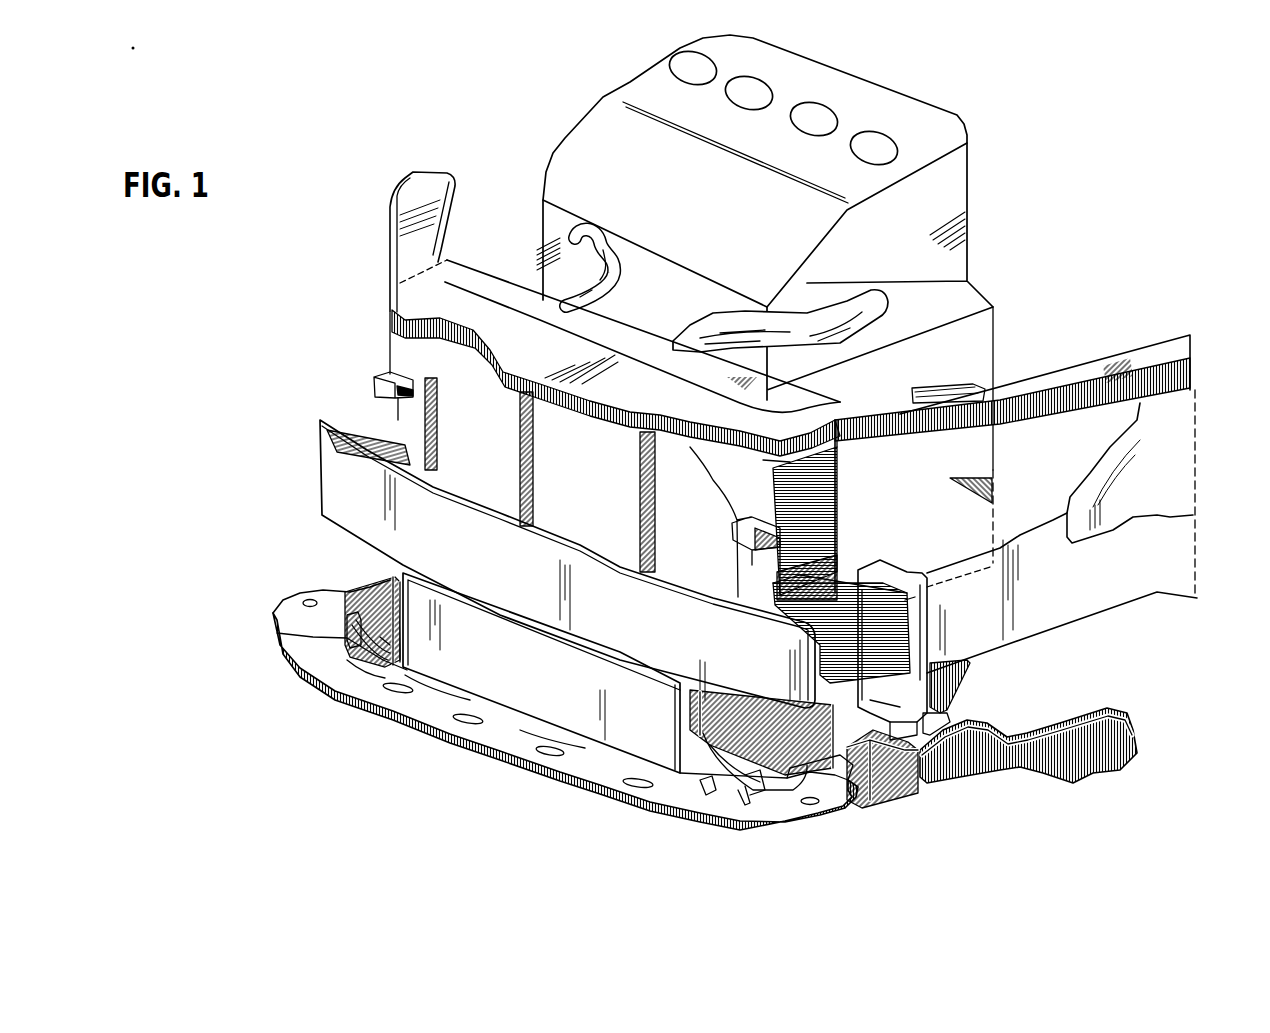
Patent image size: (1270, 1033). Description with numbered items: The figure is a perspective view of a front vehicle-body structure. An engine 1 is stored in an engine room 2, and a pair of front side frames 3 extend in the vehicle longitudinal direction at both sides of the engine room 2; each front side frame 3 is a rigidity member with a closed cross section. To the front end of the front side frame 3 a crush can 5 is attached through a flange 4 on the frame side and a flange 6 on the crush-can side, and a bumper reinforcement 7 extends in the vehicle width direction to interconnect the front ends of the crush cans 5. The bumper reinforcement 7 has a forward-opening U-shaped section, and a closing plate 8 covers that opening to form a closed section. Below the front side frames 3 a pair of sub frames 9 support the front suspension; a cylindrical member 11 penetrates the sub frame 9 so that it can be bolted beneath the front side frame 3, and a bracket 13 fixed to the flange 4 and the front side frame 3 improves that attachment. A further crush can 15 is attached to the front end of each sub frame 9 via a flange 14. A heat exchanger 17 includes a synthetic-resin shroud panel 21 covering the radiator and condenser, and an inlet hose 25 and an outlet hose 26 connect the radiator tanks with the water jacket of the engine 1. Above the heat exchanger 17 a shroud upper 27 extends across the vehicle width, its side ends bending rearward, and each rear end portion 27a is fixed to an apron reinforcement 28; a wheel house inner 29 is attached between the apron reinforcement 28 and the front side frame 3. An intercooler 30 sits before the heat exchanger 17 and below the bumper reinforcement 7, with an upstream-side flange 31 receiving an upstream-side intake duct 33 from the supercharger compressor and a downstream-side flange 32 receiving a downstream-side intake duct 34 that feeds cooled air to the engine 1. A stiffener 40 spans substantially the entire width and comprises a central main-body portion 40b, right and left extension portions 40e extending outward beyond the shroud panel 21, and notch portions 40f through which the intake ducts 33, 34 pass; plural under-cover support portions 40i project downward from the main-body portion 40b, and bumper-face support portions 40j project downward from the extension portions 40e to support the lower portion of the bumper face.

The engine 1 is at (905, 90).
The engine room 2 is at (1048, 293).
The front side frame 3 is at (1070, 600).
The flange 4 is at (927, 599).
The crush can 5 is at (358, 432).
The flange 6 is at (922, 637).
The bumper reinforcement 7 is at (688, 578).
The closing plate 8 is at (650, 629).
The sub frame 9 is at (1037, 733).
The cylindrical member 11 is at (923, 735).
The bracket 13 is at (953, 683).
The flange 14 is at (922, 793).
The crush can 15 is at (380, 574).
The heat exchanger 17 is at (386, 327).
The shroud panel 21 is at (832, 488).
The inlet hose 25 is at (605, 293).
The outlet hose 26 is at (740, 310).
The shroud upper 27 is at (536, 358).
The rear end portion 27a is at (433, 185).
The apron reinforcement 28 is at (1143, 356).
The wheel house inner 29 is at (1093, 468).
The intercooler 30 is at (524, 674).
The upstream-side flange 31 is at (383, 637).
The downstream-side flange 32 is at (653, 812).
The upstream-side intake duct 33 is at (383, 673).
The downstream-side intake duct 34 is at (757, 782).
The stiffener 40 is at (467, 754).
The main-body portion 40b is at (570, 763).
The extension portion 40e is at (281, 607).
The notch portion 40f is at (343, 637).
The under-cover support portion 40i is at (398, 697).
The bumper-face support portion 40j is at (309, 598).